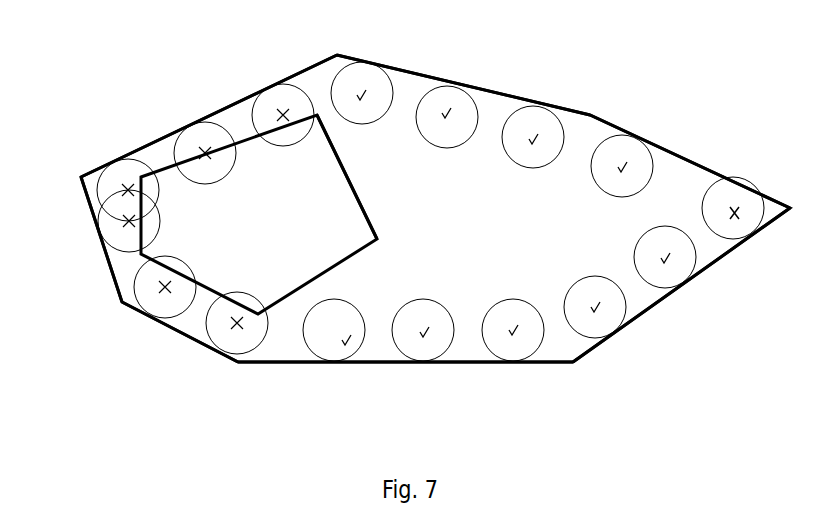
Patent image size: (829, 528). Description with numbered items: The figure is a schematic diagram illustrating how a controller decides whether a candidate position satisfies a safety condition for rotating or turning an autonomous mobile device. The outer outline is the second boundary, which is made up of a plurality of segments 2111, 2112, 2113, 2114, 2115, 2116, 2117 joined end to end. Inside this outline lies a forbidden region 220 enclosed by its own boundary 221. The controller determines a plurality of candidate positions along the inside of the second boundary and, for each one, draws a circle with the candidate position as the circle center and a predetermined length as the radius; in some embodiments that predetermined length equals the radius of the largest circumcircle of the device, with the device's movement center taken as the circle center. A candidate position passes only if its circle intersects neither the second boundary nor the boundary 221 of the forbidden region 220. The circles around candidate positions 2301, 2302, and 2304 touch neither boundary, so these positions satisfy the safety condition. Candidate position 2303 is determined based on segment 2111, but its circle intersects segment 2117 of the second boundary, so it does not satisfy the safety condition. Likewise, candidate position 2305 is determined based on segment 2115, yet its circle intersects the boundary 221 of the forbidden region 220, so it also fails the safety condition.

The forbidden region 220 is at (259, 214).
The boundary of the forbidden region 221 is at (345, 168).
The segment of the second boundary 2111 is at (653, 308).
The segment of the second boundary 2112 is at (467, 362).
The segment of the second boundary 2113 is at (175, 330).
The segment of the second boundary 2114 is at (110, 277).
The segment of the second boundary 2115 is at (228, 108).
The segment of the second boundary 2116 is at (408, 70).
The segment of the second boundary 2117 is at (620, 125).
The candidate position 2301 is at (334, 362).
The candidate position 2302 is at (423, 330).
The candidate position 2303 is at (733, 208).
The candidate position 2304 is at (447, 117).
The candidate position 2305 is at (205, 153).